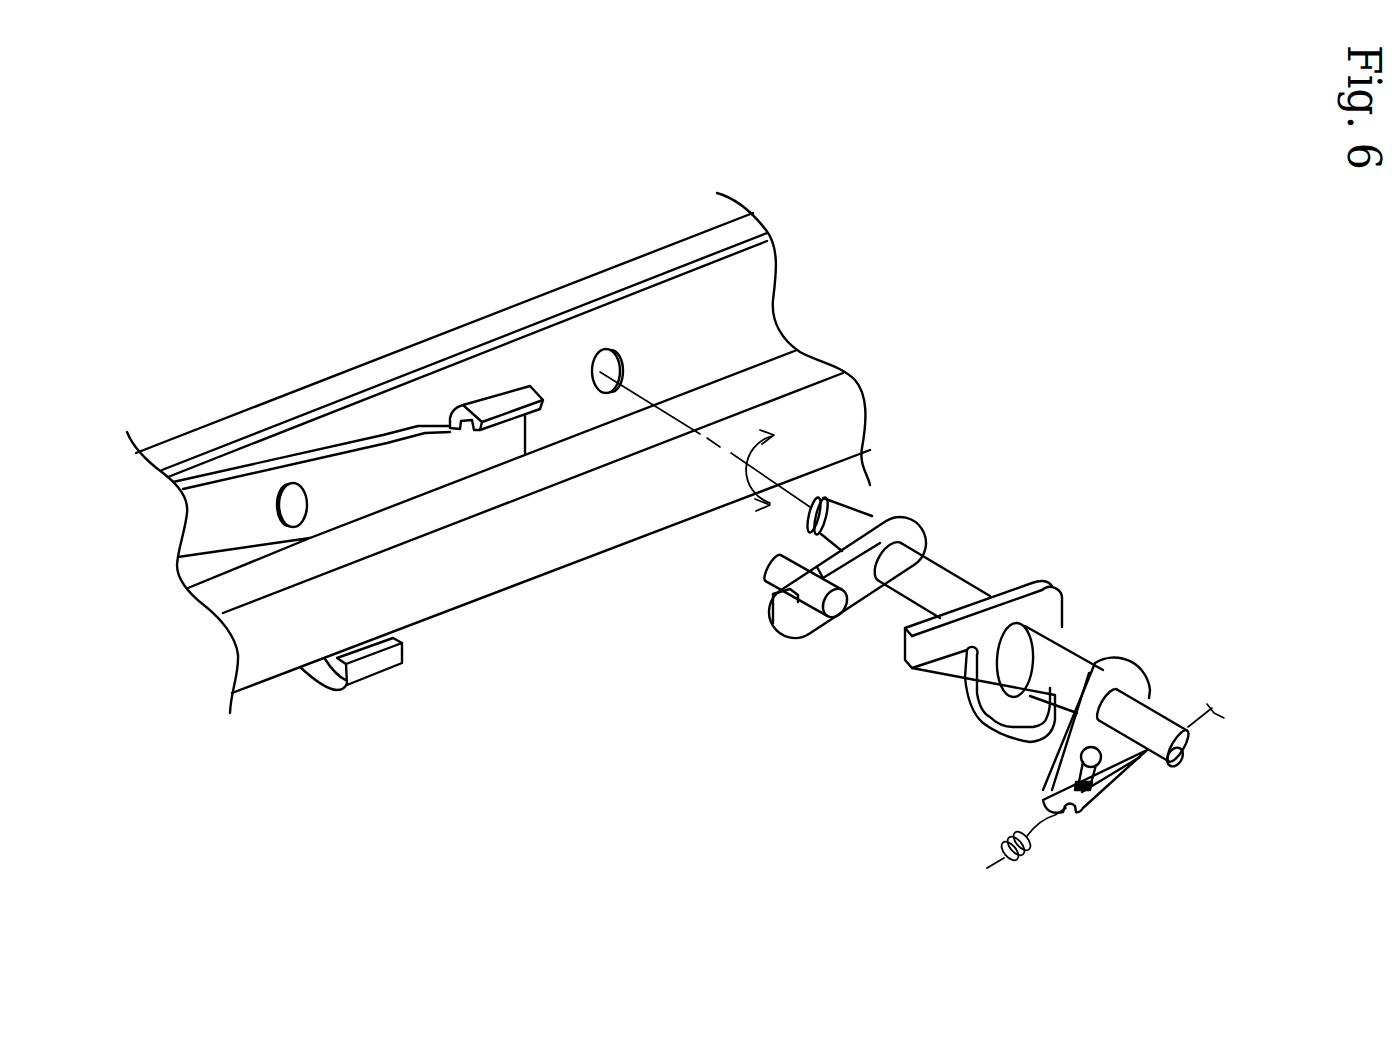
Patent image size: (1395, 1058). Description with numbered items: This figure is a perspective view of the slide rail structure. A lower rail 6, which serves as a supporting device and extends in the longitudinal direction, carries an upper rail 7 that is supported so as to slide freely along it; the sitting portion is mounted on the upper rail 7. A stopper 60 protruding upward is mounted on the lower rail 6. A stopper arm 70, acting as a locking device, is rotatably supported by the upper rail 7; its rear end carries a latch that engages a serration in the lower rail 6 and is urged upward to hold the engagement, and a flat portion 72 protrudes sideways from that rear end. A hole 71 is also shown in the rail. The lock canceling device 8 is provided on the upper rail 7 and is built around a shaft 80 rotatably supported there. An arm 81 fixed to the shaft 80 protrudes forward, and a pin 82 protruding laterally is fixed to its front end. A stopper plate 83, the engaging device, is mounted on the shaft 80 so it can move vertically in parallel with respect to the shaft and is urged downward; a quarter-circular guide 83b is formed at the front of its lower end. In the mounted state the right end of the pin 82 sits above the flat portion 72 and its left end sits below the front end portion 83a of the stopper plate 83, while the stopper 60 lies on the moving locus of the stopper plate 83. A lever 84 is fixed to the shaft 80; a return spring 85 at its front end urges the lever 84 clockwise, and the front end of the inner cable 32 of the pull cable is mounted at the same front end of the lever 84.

The lower rail 6 is at (556, 535).
The upper rail 7 is at (743, 300).
The stopper arm 70 is at (380, 433).
The hole 71 is at (301, 502).
The flat portion 72 is at (507, 396).
The stopper 60 is at (393, 660).
The lock canceling device 8 is at (1024, 474).
The shaft 80 is at (933, 573).
The arm 81 is at (867, 597).
The pin 82 is at (773, 580).
The stopper plate 83 is at (987, 672).
The front end portion 83a is at (897, 668).
The guide 83b is at (975, 718).
The lever 84 is at (1126, 668).
The inner cable 32 is at (1202, 724).
The return spring 85 is at (1023, 860).